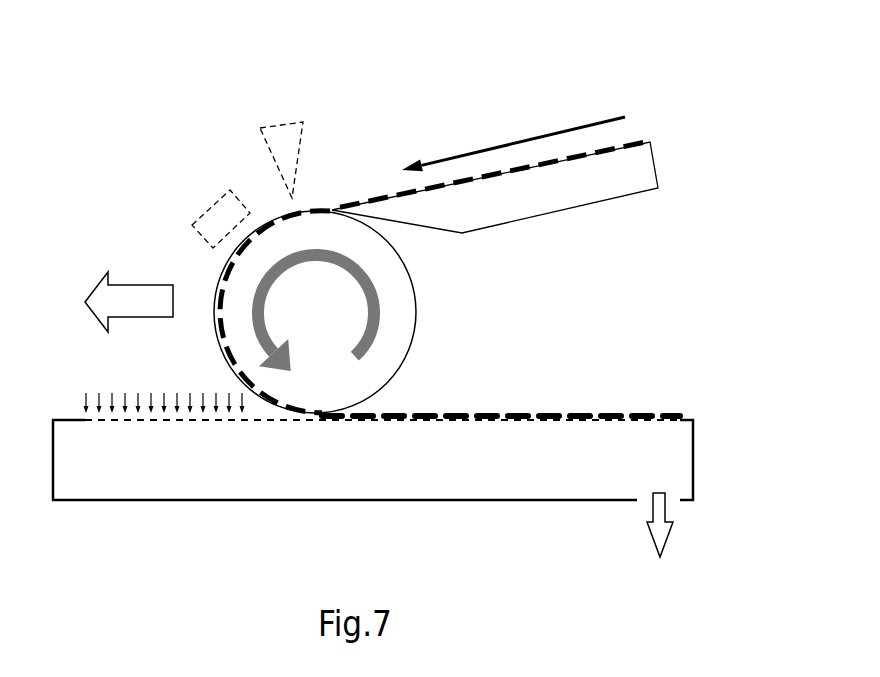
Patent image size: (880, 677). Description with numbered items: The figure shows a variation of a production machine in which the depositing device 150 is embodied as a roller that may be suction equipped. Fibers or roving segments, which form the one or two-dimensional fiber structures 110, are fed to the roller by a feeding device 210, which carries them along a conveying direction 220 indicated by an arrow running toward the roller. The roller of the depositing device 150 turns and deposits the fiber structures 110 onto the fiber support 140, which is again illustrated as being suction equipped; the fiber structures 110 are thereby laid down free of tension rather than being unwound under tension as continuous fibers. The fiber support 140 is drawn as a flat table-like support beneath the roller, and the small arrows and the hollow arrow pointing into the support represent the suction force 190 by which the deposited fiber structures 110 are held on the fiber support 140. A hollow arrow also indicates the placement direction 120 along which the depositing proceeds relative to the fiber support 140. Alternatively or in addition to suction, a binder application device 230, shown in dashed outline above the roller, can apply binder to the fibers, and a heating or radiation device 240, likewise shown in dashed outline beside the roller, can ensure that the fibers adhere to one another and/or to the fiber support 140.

The 1 or 2-dimensional fiber structures 110 is at (617, 416).
The placement direction 120 is at (145, 282).
The fiber support 140 is at (163, 503).
The depositing device 150 is at (417, 300).
The suction force 190 is at (85, 400).
The feeding device 210 is at (648, 193).
The conveying direction 220 is at (508, 140).
The binder application device 230 is at (270, 122).
The heating or radiation device 240 is at (207, 208).